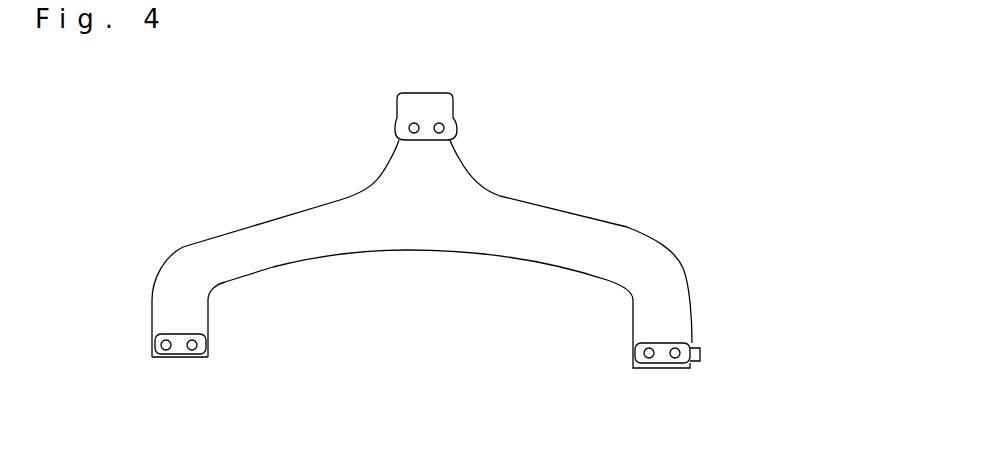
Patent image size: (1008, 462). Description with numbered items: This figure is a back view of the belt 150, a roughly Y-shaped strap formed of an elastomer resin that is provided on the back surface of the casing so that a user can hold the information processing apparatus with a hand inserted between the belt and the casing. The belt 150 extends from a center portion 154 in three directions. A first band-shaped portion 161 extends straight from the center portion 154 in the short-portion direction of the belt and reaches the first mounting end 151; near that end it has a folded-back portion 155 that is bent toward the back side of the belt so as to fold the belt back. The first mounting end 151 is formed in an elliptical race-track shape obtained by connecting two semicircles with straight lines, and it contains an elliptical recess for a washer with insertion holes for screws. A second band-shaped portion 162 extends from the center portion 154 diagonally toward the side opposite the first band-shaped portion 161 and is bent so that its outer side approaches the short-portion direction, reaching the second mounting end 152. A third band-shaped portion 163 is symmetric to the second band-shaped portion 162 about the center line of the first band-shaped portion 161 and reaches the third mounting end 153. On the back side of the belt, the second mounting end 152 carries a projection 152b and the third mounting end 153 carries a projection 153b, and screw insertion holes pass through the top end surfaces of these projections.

The belt 150 is at (482, 255).
The first mounting end 151 is at (461, 125).
The second mounting end 152 is at (208, 353).
The projection 152b is at (182, 347).
The third mounting end 153 is at (633, 363).
The projection 153b is at (662, 357).
The center portion 154 is at (415, 223).
The folded-back portion 155 is at (419, 99).
The first band-shaped portion 161 is at (420, 157).
The second band-shaped portion 162 is at (257, 237).
The third band-shaped portion 163 is at (578, 227).